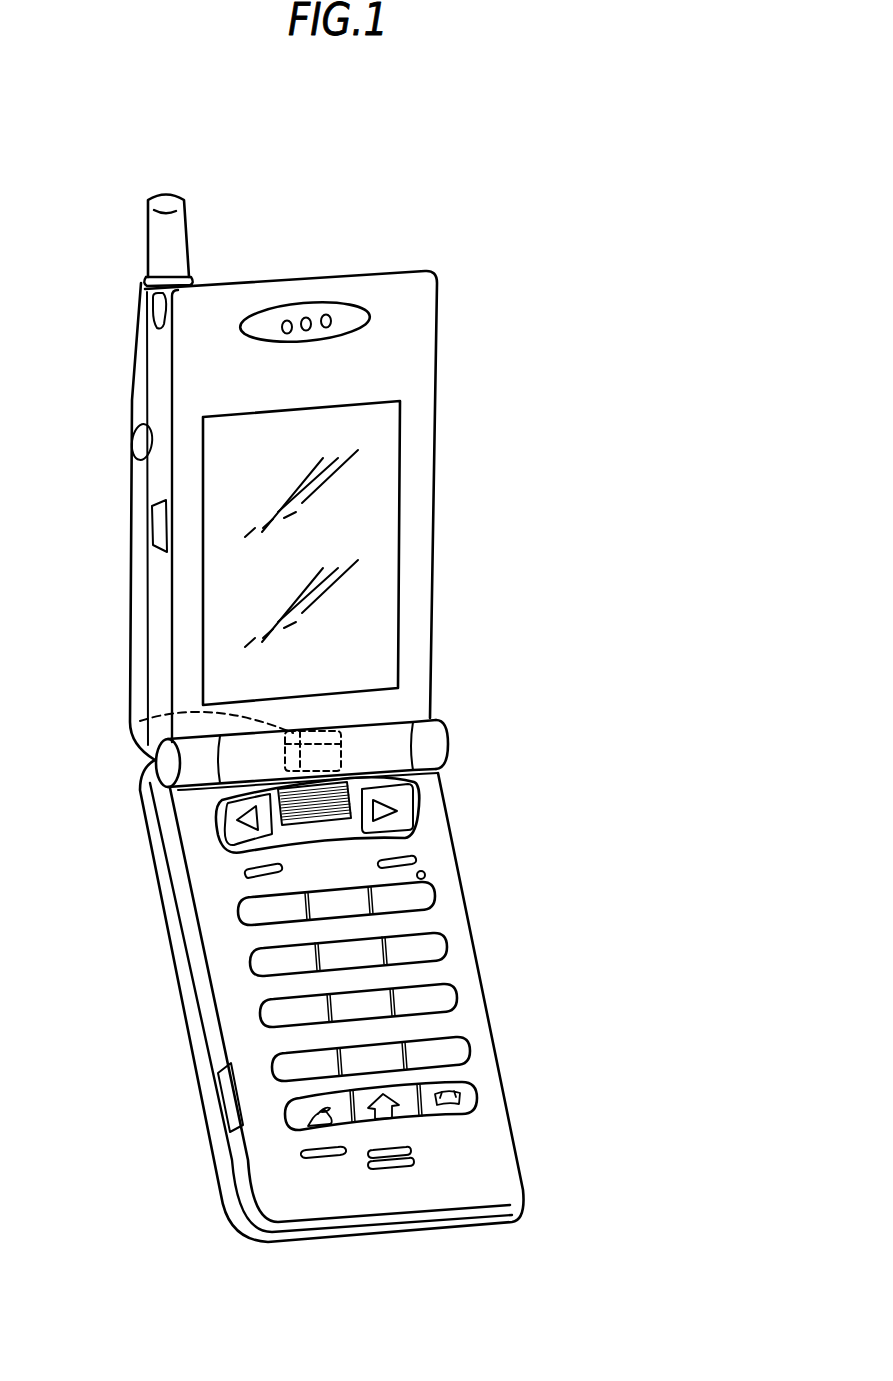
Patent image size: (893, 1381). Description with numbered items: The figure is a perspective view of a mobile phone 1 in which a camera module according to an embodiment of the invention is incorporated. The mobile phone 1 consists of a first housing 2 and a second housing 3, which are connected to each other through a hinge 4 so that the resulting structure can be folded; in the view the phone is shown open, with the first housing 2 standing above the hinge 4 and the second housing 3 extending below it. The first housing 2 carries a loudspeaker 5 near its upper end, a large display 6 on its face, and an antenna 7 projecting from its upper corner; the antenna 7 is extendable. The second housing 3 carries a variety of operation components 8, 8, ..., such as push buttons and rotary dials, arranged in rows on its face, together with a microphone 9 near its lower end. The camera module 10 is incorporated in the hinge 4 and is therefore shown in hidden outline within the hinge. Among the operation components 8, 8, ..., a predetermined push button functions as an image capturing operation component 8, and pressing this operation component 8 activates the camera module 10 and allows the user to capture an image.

The mobile phone 1 is at (404, 240).
The first housing 2 is at (410, 357).
The second housing 3 is at (432, 852).
The hinge 4 is at (440, 716).
The loudspeaker 5 is at (297, 312).
The display 6 is at (382, 512).
The antenna 7 is at (158, 238).
The operation components 8 is at (222, 812).
The microphone 9 is at (388, 1168).
The camera module 10 is at (140, 720).